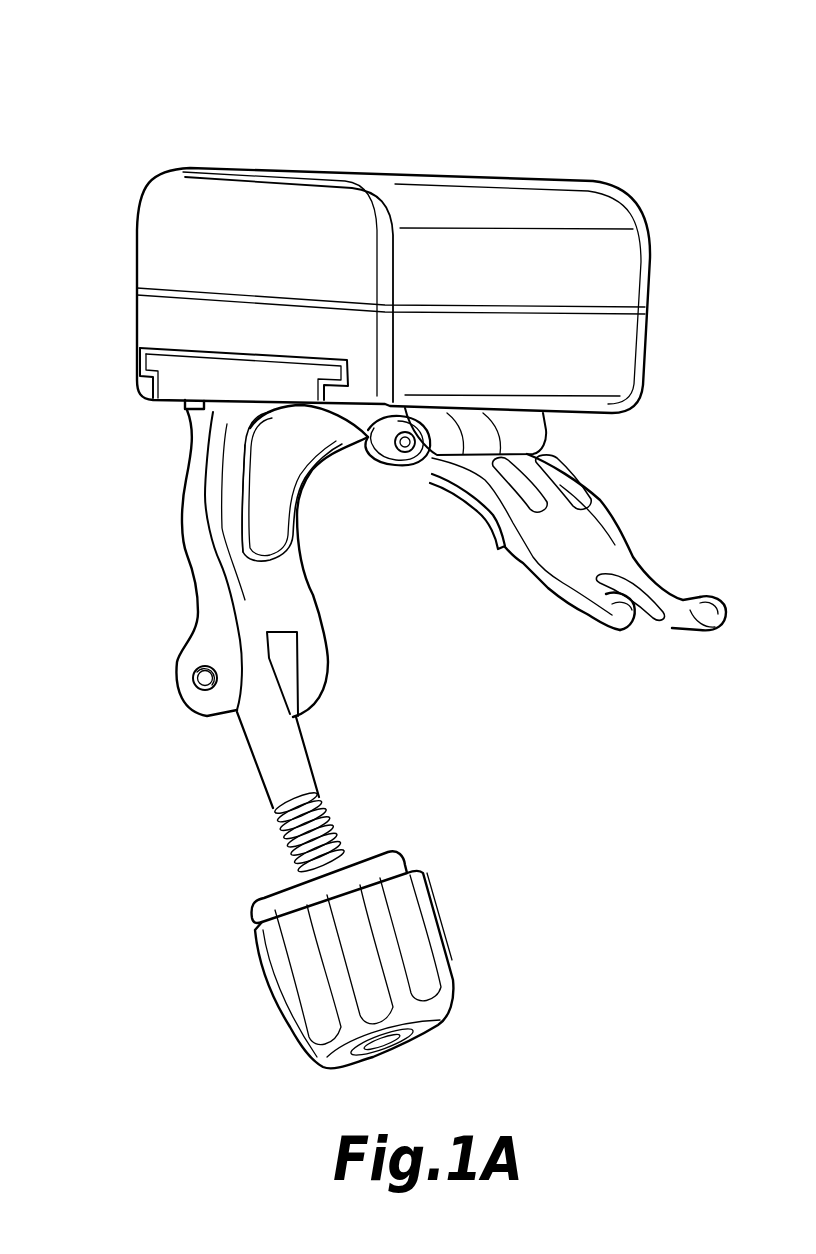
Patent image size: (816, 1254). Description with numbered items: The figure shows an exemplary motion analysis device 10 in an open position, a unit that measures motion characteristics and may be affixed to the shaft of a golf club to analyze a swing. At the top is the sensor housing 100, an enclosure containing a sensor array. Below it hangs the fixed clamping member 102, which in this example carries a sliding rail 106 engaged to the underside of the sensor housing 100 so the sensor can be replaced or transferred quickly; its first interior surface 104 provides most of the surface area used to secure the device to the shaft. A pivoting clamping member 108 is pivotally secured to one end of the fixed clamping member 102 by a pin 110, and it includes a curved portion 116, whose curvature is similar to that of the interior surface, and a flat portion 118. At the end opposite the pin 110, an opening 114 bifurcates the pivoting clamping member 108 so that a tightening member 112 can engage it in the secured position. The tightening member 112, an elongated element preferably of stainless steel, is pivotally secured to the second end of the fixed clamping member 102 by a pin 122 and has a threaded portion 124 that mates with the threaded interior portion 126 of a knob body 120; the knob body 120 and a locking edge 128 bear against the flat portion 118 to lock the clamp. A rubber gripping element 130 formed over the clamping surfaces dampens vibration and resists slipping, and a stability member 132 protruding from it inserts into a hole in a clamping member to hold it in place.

The motion analysis device 10 is at (377, 547).
The sensor housing 100 is at (597, 204).
The fixed clamping member 102 is at (195, 529).
The first interior surface 104 is at (303, 607).
The sliding rail 106 is at (150, 365).
The pivoting clamping member 108 is at (610, 516).
The pin 110 is at (405, 447).
The tightening member 112 is at (268, 767).
The opening 114 is at (667, 618).
The curved portion 116 is at (598, 536).
The flat portion 118 is at (580, 577).
The knob body 120 is at (430, 957).
The pin 122 is at (203, 678).
The threaded portion 124 is at (327, 823).
The threaded interior portion 126 is at (397, 1040).
The locking edge 128 is at (613, 614).
The gripping element 130 is at (273, 496).
The stability member 132 is at (568, 480).